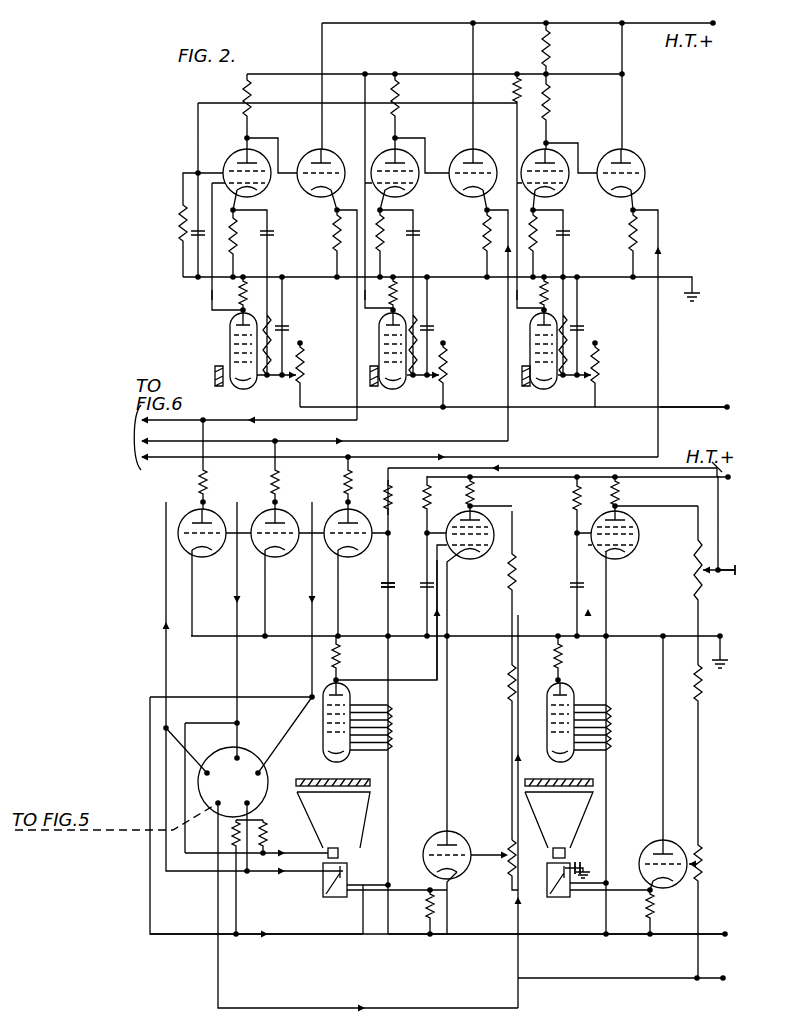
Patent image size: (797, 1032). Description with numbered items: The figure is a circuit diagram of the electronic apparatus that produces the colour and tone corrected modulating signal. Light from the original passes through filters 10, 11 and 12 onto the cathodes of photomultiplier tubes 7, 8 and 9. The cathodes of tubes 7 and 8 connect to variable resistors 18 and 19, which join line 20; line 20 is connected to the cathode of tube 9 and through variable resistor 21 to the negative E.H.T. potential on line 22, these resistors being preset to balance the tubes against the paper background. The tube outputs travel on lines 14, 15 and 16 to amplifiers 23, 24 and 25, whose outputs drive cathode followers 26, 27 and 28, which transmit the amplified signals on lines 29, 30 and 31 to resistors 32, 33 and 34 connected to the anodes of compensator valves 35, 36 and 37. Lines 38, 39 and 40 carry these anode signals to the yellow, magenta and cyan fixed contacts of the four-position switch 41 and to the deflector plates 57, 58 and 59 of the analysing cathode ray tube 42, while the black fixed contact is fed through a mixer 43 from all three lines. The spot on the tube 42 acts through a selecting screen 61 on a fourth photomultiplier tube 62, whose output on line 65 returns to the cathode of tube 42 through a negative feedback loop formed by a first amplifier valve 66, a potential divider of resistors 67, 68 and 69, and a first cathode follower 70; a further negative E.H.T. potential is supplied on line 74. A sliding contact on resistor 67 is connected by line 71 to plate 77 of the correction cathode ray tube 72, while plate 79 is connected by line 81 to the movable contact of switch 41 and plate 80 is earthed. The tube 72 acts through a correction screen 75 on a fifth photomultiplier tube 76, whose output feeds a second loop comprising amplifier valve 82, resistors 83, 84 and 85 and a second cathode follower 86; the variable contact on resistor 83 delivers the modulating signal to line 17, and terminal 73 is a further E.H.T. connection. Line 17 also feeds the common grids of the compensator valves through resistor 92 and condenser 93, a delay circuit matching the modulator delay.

The photomultiplier tube 7 is at (230, 341).
The photomultiplier tube 8 is at (379, 351).
The photomultiplier tube 9 is at (530, 353).
The filter 10 is at (217, 386).
The filter 11 is at (373, 387).
The filter 12 is at (526, 387).
The line 14 is at (212, 298).
The line 15 is at (365, 298).
The line 16 is at (517, 298).
The line 17 is at (734, 566).
The variable resistor 18 is at (305, 375).
The variable resistor 19 is at (448, 375).
The line 20 is at (548, 407).
The variable resistor 21 is at (600, 375).
The line 22 is at (672, 408).
The amplifier 23 is at (232, 157).
The amplifier 24 is at (410, 192).
The amplifier 25 is at (562, 192).
The cathode follower 26 is at (306, 157).
The cathode follower 27 is at (469, 198).
The cathode follower 28 is at (634, 190).
The line 29 is at (216, 420).
The line 30 is at (393, 441).
The line 31 is at (321, 461).
The resistor 32 is at (199, 494).
The resistor 33 is at (271, 494).
The resistor 34 is at (344, 494).
The compensator valve 35 is at (212, 555).
The compensator valve 36 is at (287, 555).
The compensator valve 37 is at (360, 555).
The line 38 is at (166, 691).
The line 39 is at (237, 691).
The line 40 is at (312, 691).
The four-position switch 41 is at (210, 818).
The analysing cathode ray tube 42 is at (346, 824).
The mixer 43 is at (258, 824).
The deflector plate 57 is at (330, 897).
The deflector plate 58 is at (343, 871).
The deflector plate 59 is at (340, 851).
The selecting screen 61 is at (306, 779).
The photomultiplier tube 62 is at (345, 763).
The line 65 is at (437, 681).
The first amplifier valve 66 is at (470, 559).
The resistor 67 is at (516, 564).
The resistor 68 is at (508, 683).
The resistor 69 is at (505, 848).
The first cathode follower 70 is at (436, 836).
The line 71 is at (520, 621).
The correction cathode ray tube 72 is at (569, 824).
The E.H.T. negative terminal 73 is at (690, 980).
The line 74 is at (690, 934).
The correction screen 75 is at (536, 779).
The photomultiplier tube 76 is at (548, 712).
The deflector plate 77 is at (566, 852).
The deflector plate 79 is at (547, 871).
The deflector plate 80 is at (593, 865).
The line 81 is at (455, 1008).
The second amplifier valve 82 is at (614, 557).
The resistor 83 is at (698, 563).
The resistor 84 is at (703, 681).
The resistor 85 is at (700, 860).
The second cathode follower 86 is at (654, 841).
The resistor 92 is at (390, 497).
The condenser 93 is at (395, 585).